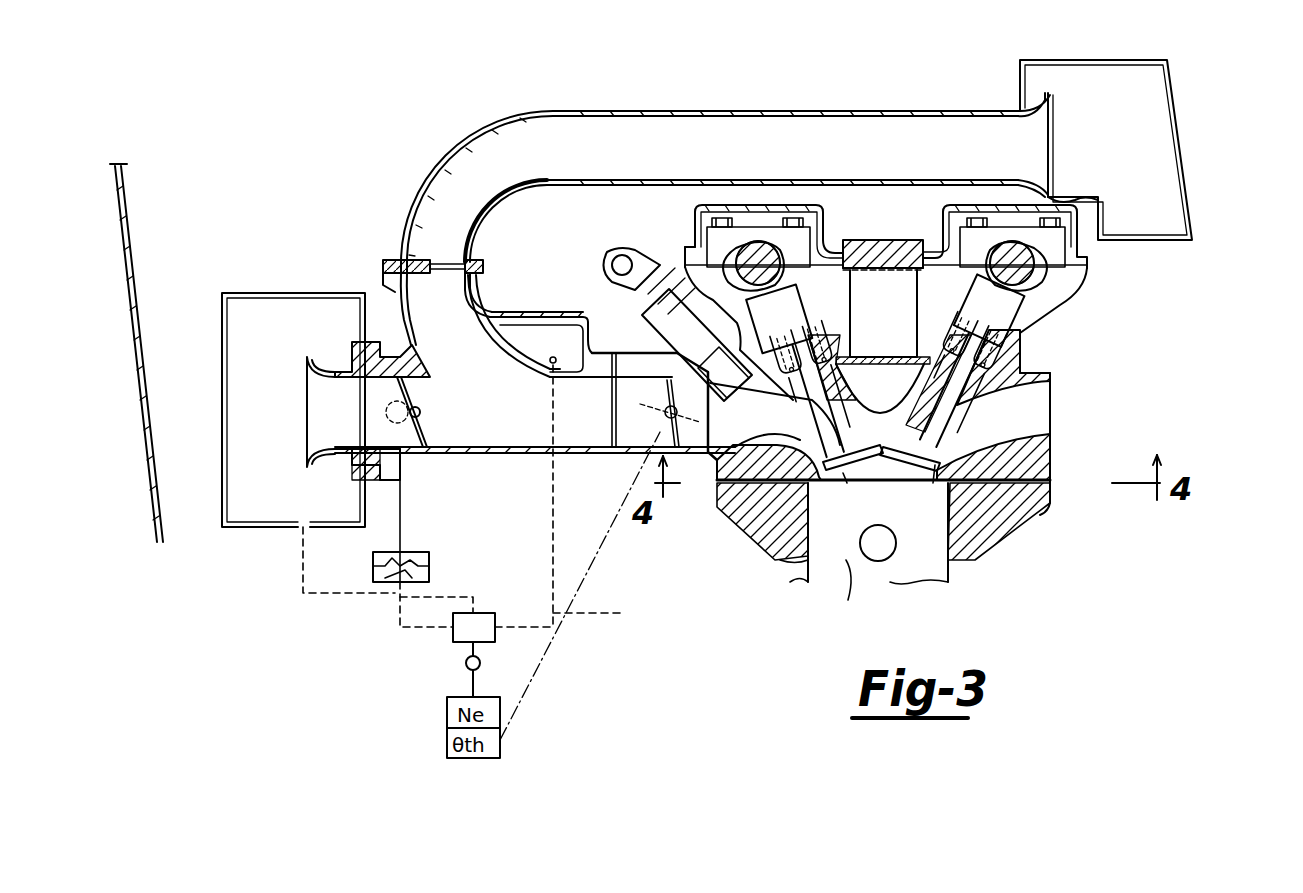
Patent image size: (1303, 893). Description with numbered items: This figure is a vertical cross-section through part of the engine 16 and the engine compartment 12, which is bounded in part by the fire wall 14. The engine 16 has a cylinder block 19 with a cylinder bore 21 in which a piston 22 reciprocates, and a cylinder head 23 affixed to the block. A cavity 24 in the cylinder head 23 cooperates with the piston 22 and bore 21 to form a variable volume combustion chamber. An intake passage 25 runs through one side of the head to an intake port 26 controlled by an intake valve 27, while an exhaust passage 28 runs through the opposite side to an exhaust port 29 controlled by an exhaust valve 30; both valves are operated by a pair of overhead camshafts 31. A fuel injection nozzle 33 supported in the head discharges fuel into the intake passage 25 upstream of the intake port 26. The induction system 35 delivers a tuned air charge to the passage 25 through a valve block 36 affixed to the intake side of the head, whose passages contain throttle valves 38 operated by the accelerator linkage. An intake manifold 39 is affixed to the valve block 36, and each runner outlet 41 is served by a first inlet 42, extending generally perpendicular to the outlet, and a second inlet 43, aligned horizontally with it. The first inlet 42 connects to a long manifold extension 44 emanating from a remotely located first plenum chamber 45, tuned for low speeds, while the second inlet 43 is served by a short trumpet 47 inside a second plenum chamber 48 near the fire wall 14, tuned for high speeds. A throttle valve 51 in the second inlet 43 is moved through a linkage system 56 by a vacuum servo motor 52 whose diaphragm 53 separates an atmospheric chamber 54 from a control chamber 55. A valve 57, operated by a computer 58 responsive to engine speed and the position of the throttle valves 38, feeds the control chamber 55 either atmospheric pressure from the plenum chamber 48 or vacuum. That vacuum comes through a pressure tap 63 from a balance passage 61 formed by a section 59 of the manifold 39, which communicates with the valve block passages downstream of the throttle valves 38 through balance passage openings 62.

The engine compartment 12 is at (136, 190).
The fire wall 14 is at (120, 210).
The engine 16 is at (1045, 350).
The cylinder block 19 is at (1030, 512).
The cylinder bore 21 is at (820, 581).
The piston 22 is at (945, 583).
The cylinder head 23 is at (1057, 472).
The recess or cavity (combustion chamber) 24 is at (900, 490).
The intake passage 25 is at (700, 465).
The intake port 26 is at (832, 470).
The intake valve 27 is at (832, 430).
The exhaust passage 28 is at (1045, 415).
The exhaust port 29 is at (988, 442).
The exhaust valve 30 is at (930, 440).
The camshaft 31 is at (985, 247).
The fuel injection nozzle 33 is at (660, 278).
The induction system 35 is at (402, 199).
The valve block 36 is at (665, 435).
The throttle valve 38 is at (662, 432).
The intake manifold 39 is at (511, 456).
The outlet 41 is at (604, 442).
The first inlet 42 is at (468, 287).
The second inlet 43 is at (420, 394).
The manifold extension 44 is at (600, 110).
The first plenum chamber 45 is at (1180, 108).
The trumpet 47 is at (320, 462).
The second plenum chamber 48 is at (266, 295).
The throttle valve 51 is at (425, 436).
The vacuum servo motor 52 is at (445, 562).
The diaphragm 53 is at (373, 572).
The atmospheric chamber 54 is at (412, 552).
The control chamber 55 is at (413, 570).
The linkage system 56 is at (401, 492).
The valve 57 is at (492, 613).
The computer 58 is at (466, 663).
The section 59 is at (500, 318).
The balance passage 61 is at (535, 330).
The balance passage opening 62 is at (632, 358).
The pressure tap 63 is at (604, 614).